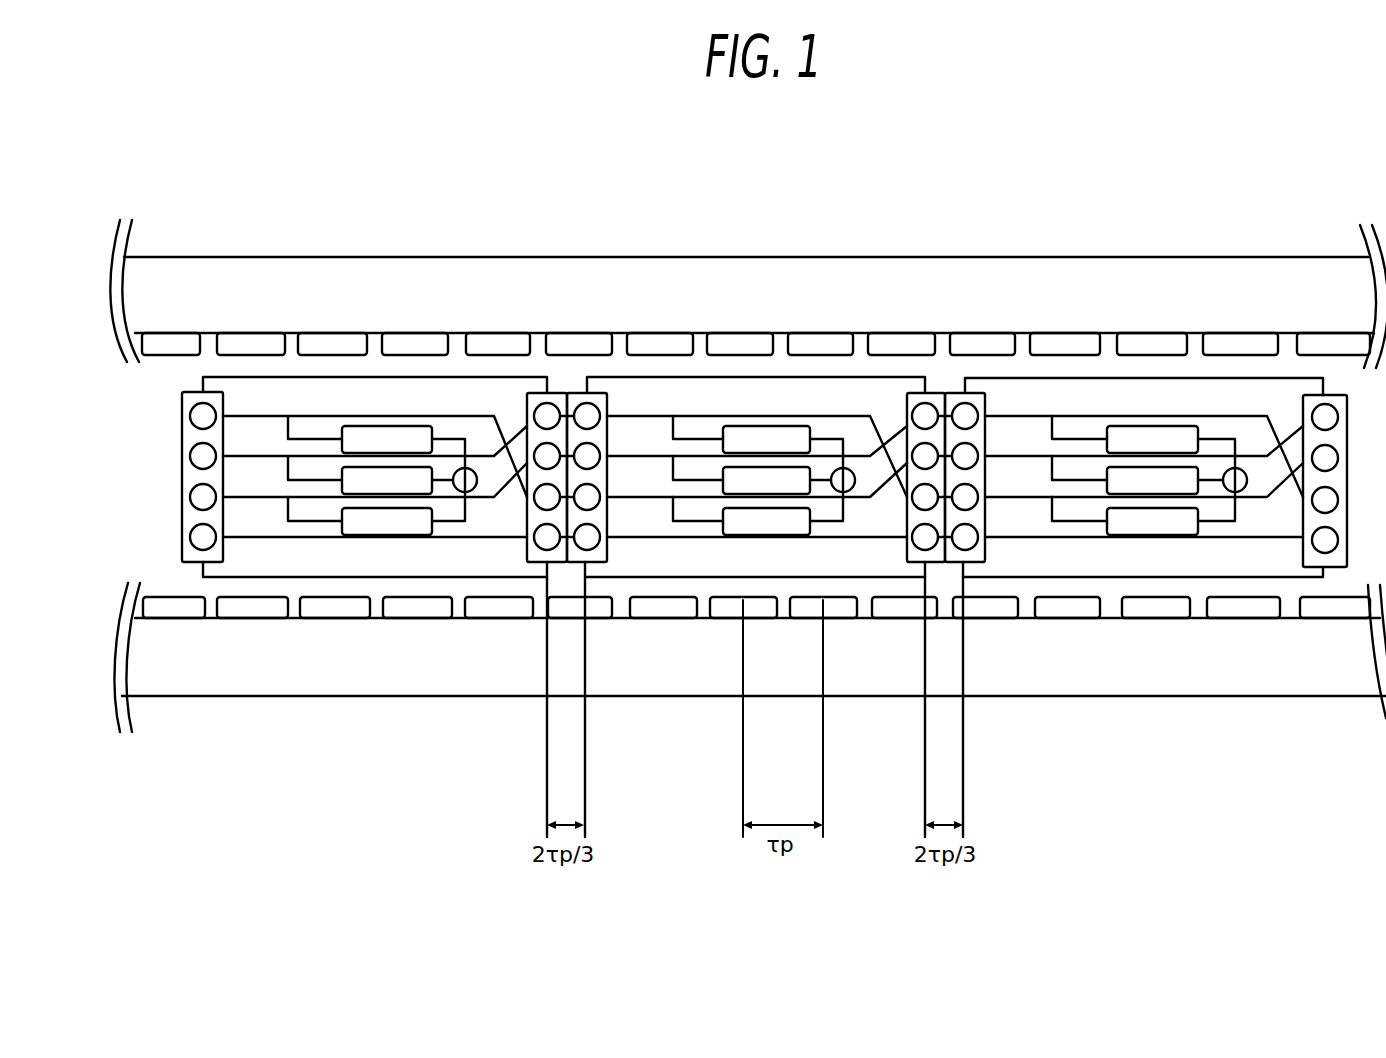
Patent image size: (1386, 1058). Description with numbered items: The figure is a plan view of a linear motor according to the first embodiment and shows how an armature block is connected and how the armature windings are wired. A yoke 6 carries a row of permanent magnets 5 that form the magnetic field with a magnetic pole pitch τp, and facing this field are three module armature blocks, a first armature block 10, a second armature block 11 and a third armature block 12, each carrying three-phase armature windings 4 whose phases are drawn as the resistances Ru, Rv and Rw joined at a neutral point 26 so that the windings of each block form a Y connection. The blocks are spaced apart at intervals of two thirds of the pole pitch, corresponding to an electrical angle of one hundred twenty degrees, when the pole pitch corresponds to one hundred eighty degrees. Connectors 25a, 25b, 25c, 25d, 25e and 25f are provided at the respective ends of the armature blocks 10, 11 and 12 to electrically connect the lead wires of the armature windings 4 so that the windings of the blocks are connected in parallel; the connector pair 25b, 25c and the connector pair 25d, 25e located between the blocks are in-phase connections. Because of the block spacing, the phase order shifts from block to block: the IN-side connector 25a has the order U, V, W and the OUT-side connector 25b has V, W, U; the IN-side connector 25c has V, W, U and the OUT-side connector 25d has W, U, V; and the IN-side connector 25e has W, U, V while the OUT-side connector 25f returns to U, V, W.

The armature winding 4 is at (342, 413).
The permanent magnet 5 is at (250, 340).
The yoke 6 is at (197, 290).
The first armature block 10 is at (413, 377).
The second armature block 11 is at (752, 377).
The third armature block 12 is at (1152, 379).
The connector 25a is at (182, 398).
The connector 25b is at (557, 393).
The connector 25c is at (597, 393).
The connector 25d is at (917, 393).
The connector 25e is at (957, 393).
The connector 25f is at (1328, 396).
The neutral point 26 is at (470, 492).